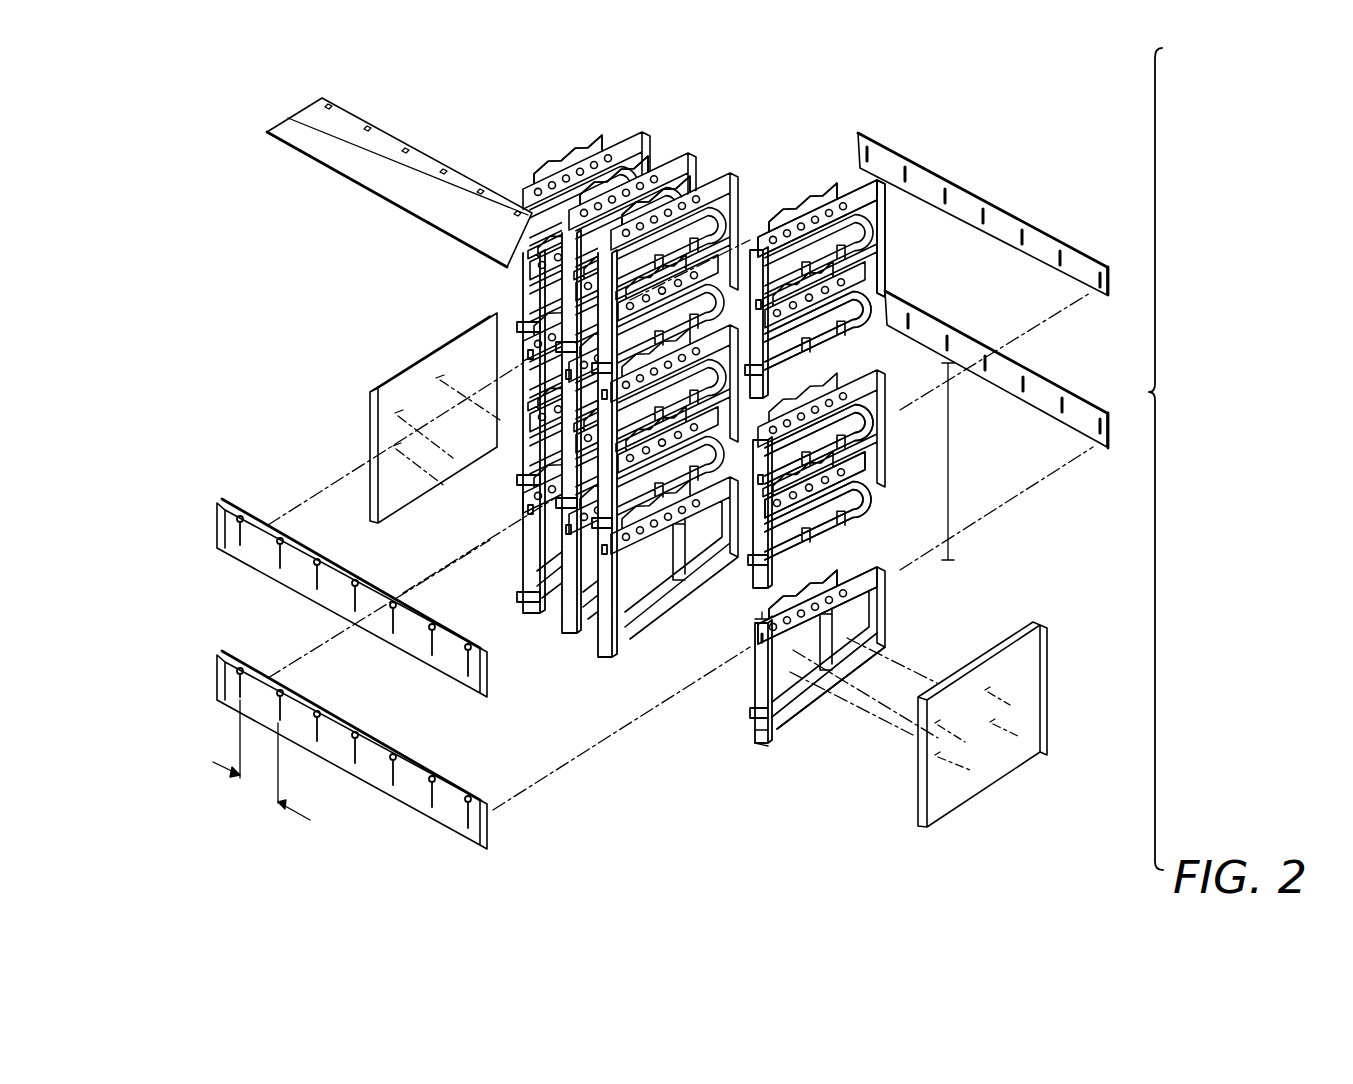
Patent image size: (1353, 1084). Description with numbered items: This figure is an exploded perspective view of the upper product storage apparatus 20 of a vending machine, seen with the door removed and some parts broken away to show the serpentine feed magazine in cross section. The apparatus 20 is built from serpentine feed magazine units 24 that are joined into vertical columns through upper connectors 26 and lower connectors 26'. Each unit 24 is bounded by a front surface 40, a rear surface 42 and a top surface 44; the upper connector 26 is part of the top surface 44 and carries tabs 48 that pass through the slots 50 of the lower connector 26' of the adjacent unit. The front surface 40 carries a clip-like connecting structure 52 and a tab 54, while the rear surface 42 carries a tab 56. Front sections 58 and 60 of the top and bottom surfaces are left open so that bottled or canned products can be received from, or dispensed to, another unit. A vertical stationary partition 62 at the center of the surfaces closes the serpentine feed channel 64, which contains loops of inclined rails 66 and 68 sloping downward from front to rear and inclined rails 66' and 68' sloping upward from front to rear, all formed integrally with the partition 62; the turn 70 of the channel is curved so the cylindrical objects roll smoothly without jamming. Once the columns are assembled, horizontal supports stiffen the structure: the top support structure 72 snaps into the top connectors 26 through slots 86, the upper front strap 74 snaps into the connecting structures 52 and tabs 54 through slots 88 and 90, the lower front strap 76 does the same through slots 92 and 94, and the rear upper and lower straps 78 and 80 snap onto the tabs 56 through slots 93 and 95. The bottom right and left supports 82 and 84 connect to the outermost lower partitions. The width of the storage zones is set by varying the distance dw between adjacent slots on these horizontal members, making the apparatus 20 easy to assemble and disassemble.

The upper product storage apparatus 20 is at (1176, 459).
The serpentine feed magazine unit 24 is at (964, 461).
The upper connector 26 is at (820, 255).
The lower connector 26' is at (827, 331).
The front surface 40 is at (758, 678).
The rear surface 42 is at (886, 614).
The top surface 44 is at (860, 187).
The tabs 48 is at (808, 195).
The slots 50 is at (813, 717).
The clip-like connecting structure 52 is at (770, 586).
The tab 54 is at (760, 639).
The tab 56 is at (887, 229).
The front section of the top surface 58 is at (777, 622).
The front section of the bottom surface 60 is at (780, 733).
The vertical stationary partition 62 is at (762, 233).
The serpentine feed channel 64 is at (614, 650).
The inclined rail 66 is at (839, 479).
The inclined rail 66' is at (849, 495).
The inclined rail 68 is at (854, 445).
The inclined rail 68' is at (830, 521).
The turn of the serpentine channel 70 is at (875, 600).
The top support structure 72 is at (392, 203).
The upper front strap 74 is at (215, 523).
The front strap 76 is at (215, 680).
The rear upper strap 78 is at (977, 200).
The rear lower strap 80 is at (967, 333).
The bottom right support 82 is at (1040, 622).
The bottom left support 84 is at (398, 373).
The slots 86 is at (568, 218).
The slots 88 is at (358, 586).
The slots 90 is at (313, 586).
The slots 92 is at (362, 740).
The slots 93 is at (1030, 228).
The slots 94 is at (356, 765).
The slots 95 is at (1040, 381).
The distance between adjacent slots dw is at (261, 760).